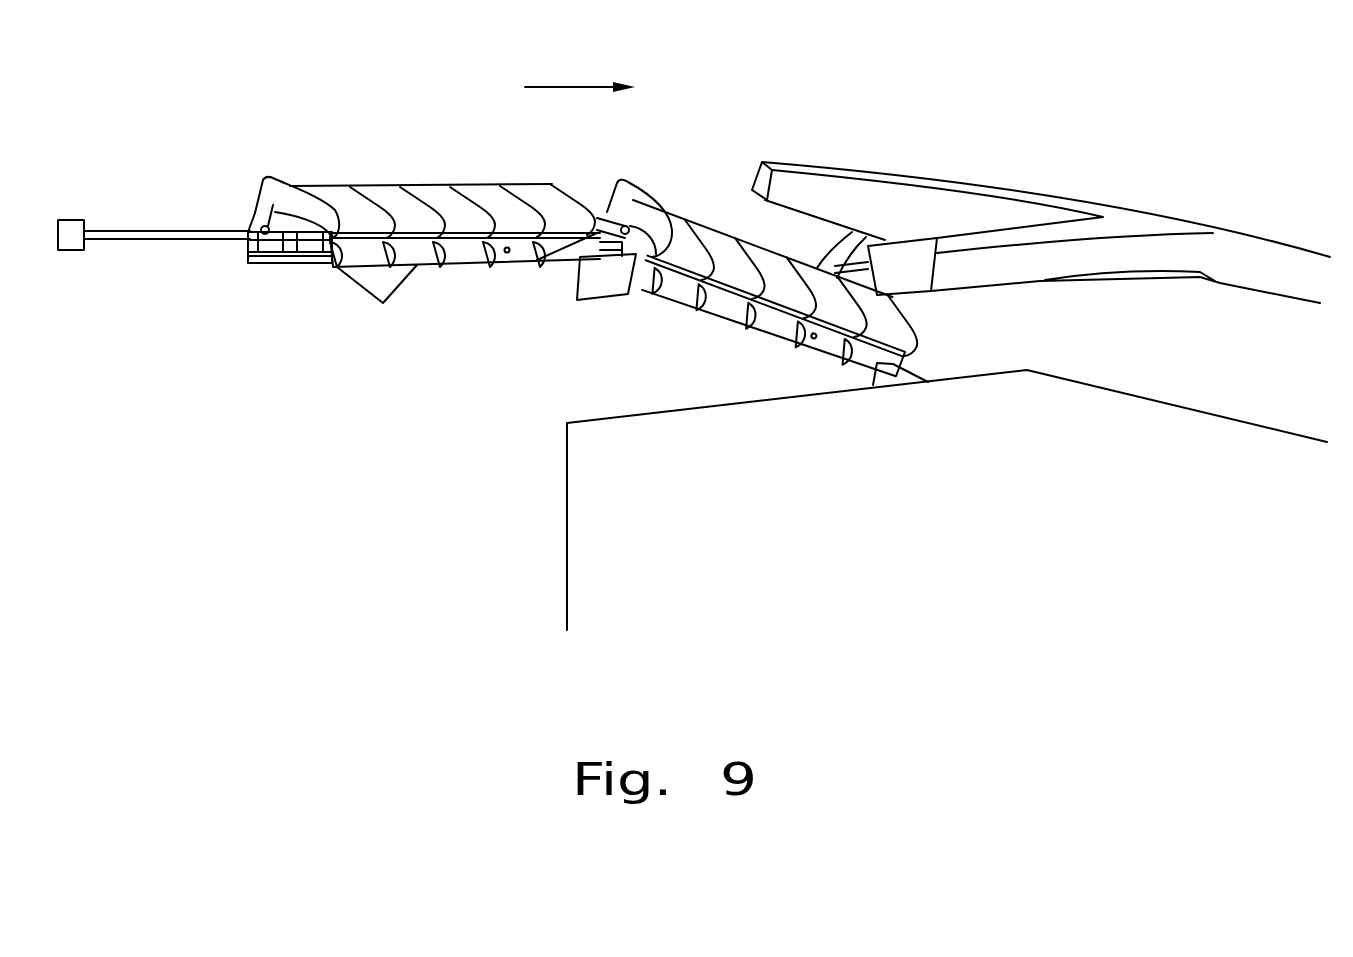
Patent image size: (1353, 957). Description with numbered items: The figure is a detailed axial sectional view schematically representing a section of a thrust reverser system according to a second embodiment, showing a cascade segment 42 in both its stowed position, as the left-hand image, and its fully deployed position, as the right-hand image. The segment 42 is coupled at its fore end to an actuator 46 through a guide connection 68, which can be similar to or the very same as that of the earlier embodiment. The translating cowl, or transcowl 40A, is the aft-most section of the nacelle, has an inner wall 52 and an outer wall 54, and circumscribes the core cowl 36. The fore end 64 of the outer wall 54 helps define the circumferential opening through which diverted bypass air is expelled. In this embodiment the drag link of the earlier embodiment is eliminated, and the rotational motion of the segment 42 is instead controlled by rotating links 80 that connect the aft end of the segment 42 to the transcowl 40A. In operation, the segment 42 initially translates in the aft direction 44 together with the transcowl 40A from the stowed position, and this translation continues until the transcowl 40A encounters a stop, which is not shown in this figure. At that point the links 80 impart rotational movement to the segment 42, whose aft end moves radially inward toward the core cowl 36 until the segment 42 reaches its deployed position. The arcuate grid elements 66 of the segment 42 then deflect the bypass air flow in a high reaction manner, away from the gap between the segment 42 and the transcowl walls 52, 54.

The core cowl 36 is at (1107, 387).
The translating cowl (transcowl) 40A is at (1090, 189).
The cascade segment 42 is at (456, 176).
The aft direction 44 is at (580, 86).
The actuator 46 is at (172, 230).
The inner wall of the transcowl 52 is at (940, 293).
The outer wall of the transcowl 54 is at (801, 165).
The fore end of the outer wall 64 is at (750, 162).
The grid elements 66 is at (422, 187).
The guide connection 68 is at (279, 274).
The rotating link 80 is at (842, 243).